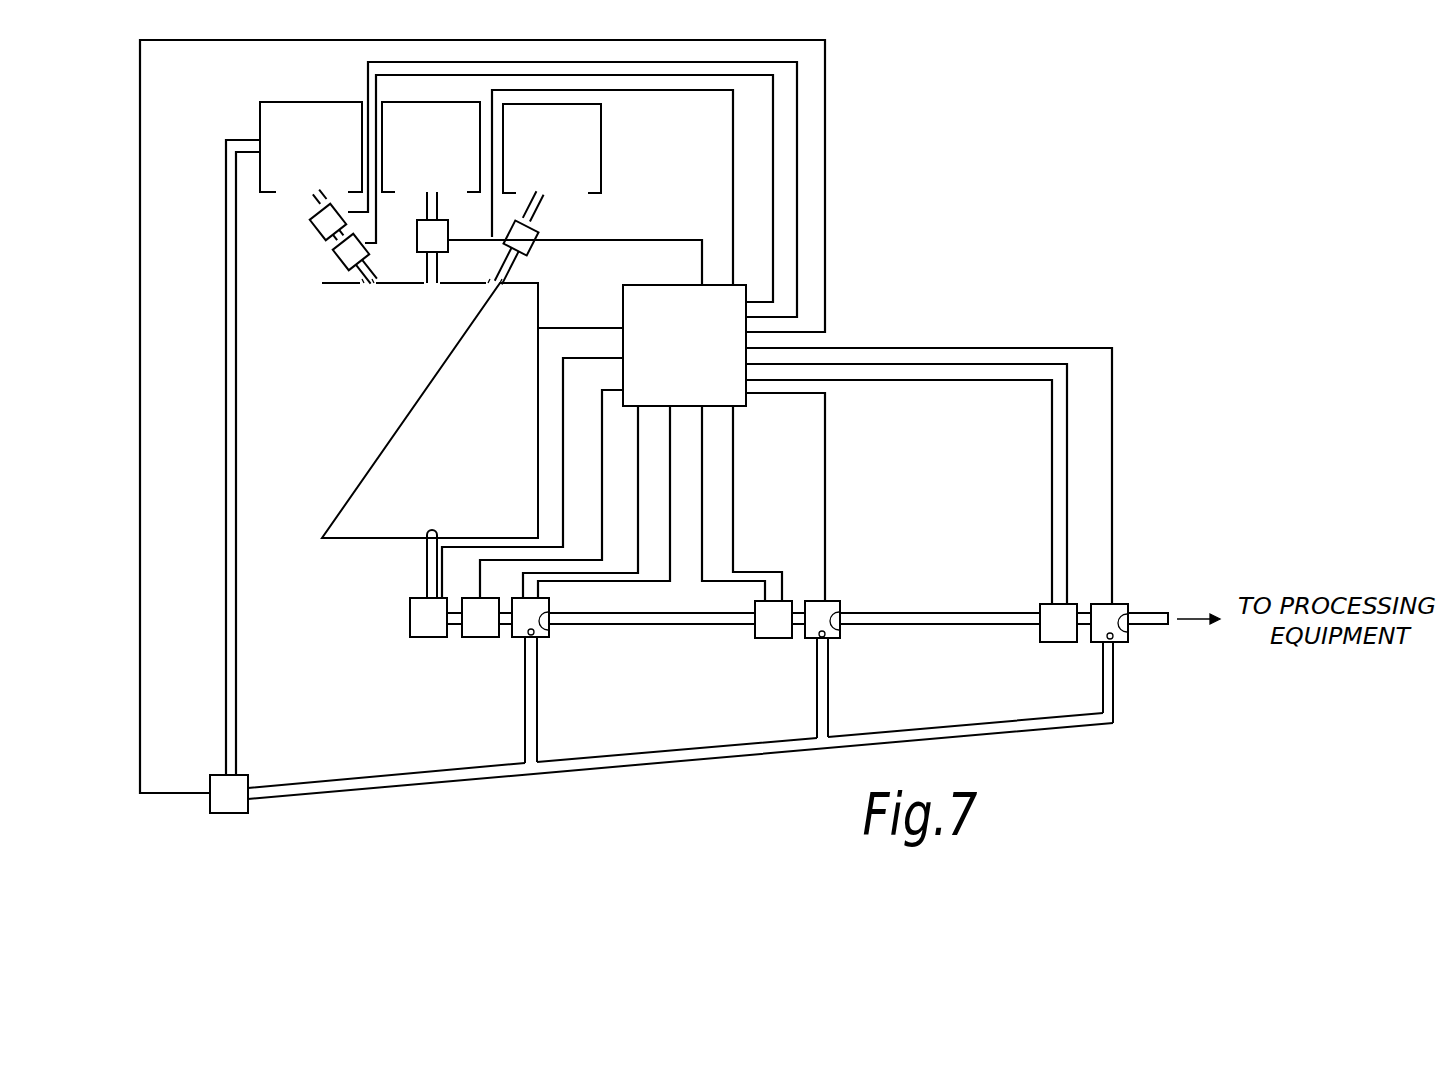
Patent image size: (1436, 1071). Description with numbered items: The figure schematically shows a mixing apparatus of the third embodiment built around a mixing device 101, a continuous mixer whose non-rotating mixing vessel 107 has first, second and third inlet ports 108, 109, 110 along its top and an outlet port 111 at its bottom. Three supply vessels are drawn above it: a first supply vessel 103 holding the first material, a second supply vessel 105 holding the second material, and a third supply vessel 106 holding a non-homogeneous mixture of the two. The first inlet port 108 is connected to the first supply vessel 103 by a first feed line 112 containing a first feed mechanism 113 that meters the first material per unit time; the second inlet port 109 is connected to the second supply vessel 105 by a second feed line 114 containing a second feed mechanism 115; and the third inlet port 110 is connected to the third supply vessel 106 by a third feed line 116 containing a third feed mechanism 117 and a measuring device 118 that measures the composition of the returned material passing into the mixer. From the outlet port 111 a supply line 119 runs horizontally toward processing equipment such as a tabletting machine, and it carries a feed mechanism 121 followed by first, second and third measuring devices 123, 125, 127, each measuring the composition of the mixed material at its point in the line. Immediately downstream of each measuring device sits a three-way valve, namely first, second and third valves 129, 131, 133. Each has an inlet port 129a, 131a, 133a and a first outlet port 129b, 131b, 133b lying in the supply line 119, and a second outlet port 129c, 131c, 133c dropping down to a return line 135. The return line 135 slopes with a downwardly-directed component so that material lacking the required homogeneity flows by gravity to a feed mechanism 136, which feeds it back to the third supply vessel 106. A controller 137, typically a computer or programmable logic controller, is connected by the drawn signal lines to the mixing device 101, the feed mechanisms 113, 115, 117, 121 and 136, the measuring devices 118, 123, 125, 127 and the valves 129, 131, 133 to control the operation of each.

The mixing device 101 is at (312, 362).
The first supply vessel 103 is at (531, 154).
The second supply vessel 105 is at (412, 152).
The third supply vessel 106 is at (293, 152).
The mixing vessel 107 is at (408, 417).
The first inlet port 108 is at (491, 286).
The second inlet port 109 is at (433, 286).
The third inlet port 110 is at (368, 286).
The outlet port 111 is at (428, 535).
The first feed line 112 is at (546, 207).
The first feed mechanism 113 is at (536, 250).
The second feed line 114 is at (433, 218).
The second feed mechanism 115 is at (424, 236).
The third feed line 116 is at (308, 200).
The third feed mechanism 117 is at (316, 226).
The measuring device 118 is at (335, 258).
The supply line 119 is at (426, 578).
The feed mechanism 121 is at (422, 613).
The first measuring device 123 is at (477, 620).
The second measuring device 125 is at (772, 627).
The third measuring device 127 is at (1060, 630).
The first valve 129 is at (541, 608).
The inlet port 129a is at (508, 628).
The first outlet port 129b is at (547, 629).
The second outlet port 129c is at (538, 640).
The second valve 131 is at (826, 612).
The inlet port 131a is at (803, 622).
The first outlet port 131b is at (838, 632).
The second outlet port 131c is at (830, 640).
The third valve 133 is at (1114, 612).
The inlet port 133a is at (1089, 622).
The first outlet port 133b is at (1124, 633).
The second outlet port 133c is at (1118, 645).
The return line 135 is at (692, 762).
The feed mechanism 136 is at (226, 802).
The controller 137 is at (664, 350).